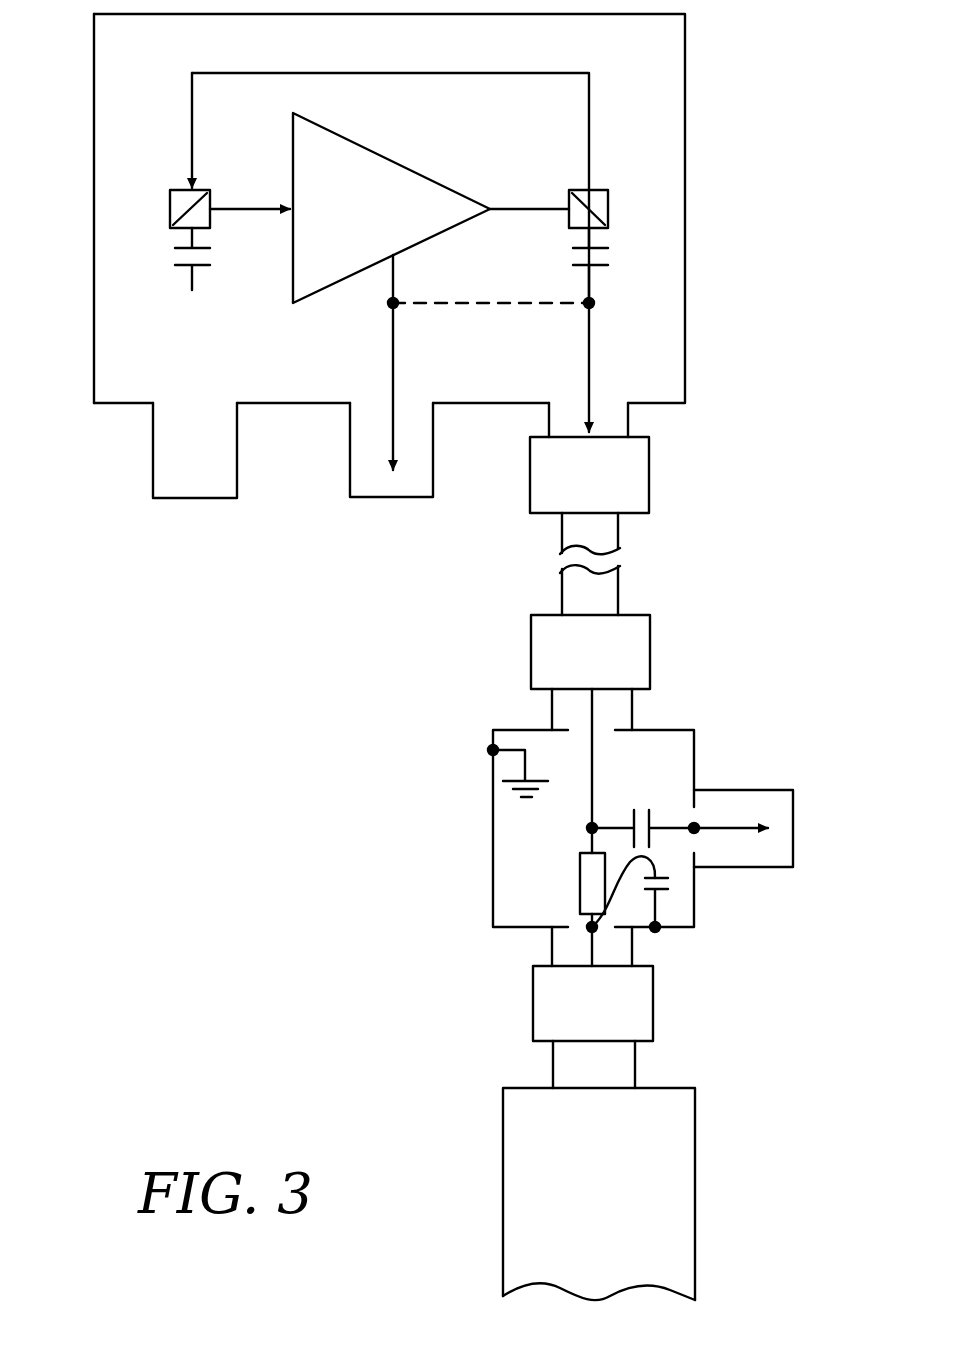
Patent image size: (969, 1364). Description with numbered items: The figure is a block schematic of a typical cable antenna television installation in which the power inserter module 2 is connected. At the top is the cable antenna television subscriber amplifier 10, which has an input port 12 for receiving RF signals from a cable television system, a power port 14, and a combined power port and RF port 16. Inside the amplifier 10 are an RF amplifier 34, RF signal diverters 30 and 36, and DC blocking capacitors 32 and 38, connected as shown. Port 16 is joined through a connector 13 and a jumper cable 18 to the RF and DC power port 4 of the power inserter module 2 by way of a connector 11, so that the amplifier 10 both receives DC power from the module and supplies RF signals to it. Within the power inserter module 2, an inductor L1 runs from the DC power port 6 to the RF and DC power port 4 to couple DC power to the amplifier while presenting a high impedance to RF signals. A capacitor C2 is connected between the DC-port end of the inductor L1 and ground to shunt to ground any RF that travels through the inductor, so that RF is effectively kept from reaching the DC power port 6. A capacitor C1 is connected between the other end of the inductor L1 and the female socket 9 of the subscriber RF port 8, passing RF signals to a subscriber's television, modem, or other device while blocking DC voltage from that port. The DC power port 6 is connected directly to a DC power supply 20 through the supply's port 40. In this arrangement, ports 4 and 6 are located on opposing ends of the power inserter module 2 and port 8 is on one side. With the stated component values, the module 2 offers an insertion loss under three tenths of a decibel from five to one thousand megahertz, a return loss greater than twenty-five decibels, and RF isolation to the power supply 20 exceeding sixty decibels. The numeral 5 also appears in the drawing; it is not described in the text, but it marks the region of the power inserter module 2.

The cable antenna television subscriber amplifier 10 is at (690, 212).
The input port 12 is at (153, 462).
The connector 13 is at (649, 482).
The power port 14 is at (350, 470).
The combined power port and RF port 16 is at (628, 423).
The jumper cable 18 is at (618, 547).
The connector 11 is at (650, 651).
The RF and DC power port 4 is at (552, 718).
The power inserter module 2 is at (570, 771).
The matching network 5 is at (492, 807).
The capacitor C1 is at (641, 810).
The subscriber RF port 8 is at (725, 790).
The female socket 9 is at (735, 828).
The inductor L1 is at (580, 884).
The capacitor C2 is at (668, 883).
The DC power port 6 is at (653, 1010).
The port 40 is at (553, 1068).
The DC power supply 20 is at (695, 1185).
The RF signal diverter 30 is at (170, 211).
The DC blocking capacitor 32 is at (176, 256).
The RF amplifier 34 is at (379, 156).
The RF signal diverter 36 is at (600, 190).
The DC blocking capacitor 38 is at (608, 257).